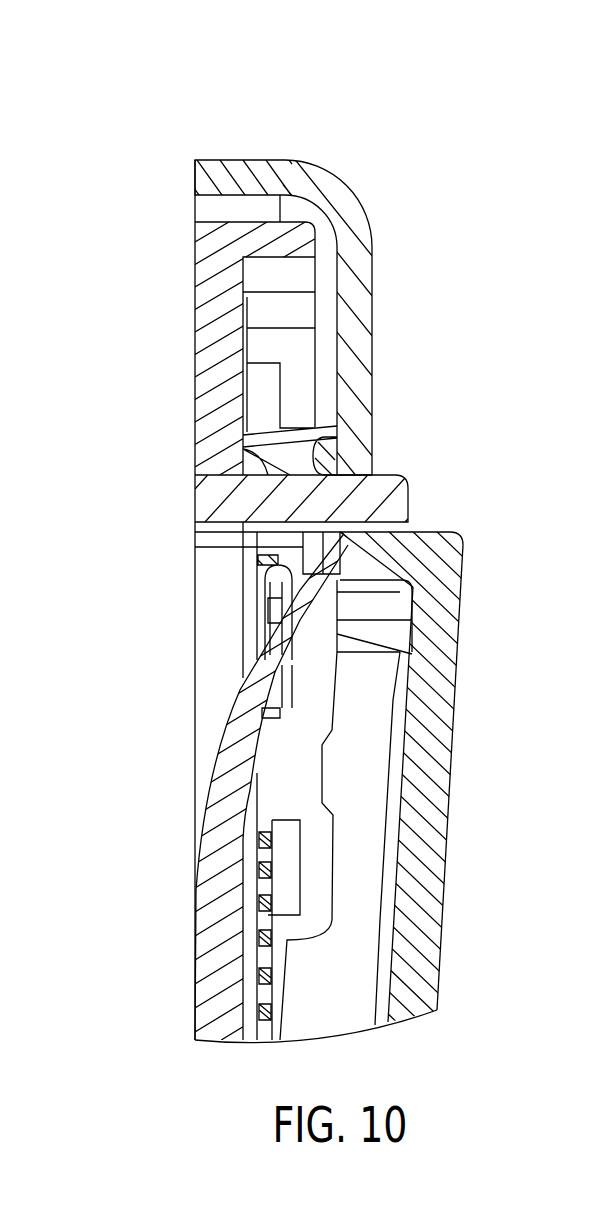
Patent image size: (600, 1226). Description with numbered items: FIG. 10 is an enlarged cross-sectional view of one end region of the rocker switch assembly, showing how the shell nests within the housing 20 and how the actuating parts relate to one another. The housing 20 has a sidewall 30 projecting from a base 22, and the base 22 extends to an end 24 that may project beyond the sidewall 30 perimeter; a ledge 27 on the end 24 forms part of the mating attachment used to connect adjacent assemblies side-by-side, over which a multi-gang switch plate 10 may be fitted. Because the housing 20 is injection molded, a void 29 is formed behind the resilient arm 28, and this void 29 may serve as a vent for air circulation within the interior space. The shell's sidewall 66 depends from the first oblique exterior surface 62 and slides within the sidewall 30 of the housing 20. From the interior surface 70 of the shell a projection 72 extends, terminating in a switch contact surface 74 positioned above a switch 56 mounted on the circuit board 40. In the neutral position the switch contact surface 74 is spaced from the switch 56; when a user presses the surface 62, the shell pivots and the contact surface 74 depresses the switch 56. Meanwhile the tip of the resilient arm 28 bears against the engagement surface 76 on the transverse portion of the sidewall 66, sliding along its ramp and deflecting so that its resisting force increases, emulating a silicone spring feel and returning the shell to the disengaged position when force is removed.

The multi-gang switch plate 10 is at (337, 192).
The housing 20 is at (195, 468).
The base 22 is at (210, 875).
The first and second ends 24 is at (208, 248).
The ledge 27 is at (305, 353).
The resilient arm 28 is at (257, 675).
The void 29 is at (215, 612).
The sidewall 30 is at (362, 495).
The circuit board 40 is at (242, 922).
The switch 56 is at (268, 606).
The first oblique exterior surface 62 is at (448, 808).
The sidewall 66 is at (372, 547).
The interior surface 70 is at (397, 868).
The projection 72 is at (370, 635).
The switch contact surface 74 is at (337, 637).
The engagement surface 76 is at (333, 545).